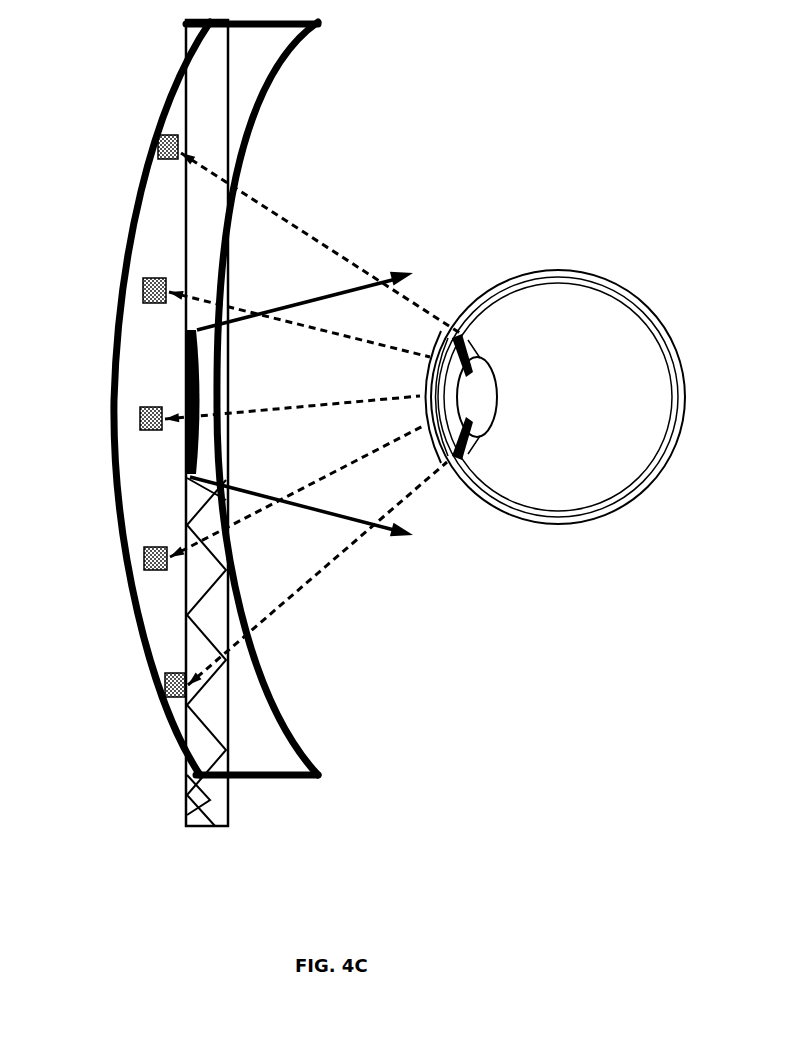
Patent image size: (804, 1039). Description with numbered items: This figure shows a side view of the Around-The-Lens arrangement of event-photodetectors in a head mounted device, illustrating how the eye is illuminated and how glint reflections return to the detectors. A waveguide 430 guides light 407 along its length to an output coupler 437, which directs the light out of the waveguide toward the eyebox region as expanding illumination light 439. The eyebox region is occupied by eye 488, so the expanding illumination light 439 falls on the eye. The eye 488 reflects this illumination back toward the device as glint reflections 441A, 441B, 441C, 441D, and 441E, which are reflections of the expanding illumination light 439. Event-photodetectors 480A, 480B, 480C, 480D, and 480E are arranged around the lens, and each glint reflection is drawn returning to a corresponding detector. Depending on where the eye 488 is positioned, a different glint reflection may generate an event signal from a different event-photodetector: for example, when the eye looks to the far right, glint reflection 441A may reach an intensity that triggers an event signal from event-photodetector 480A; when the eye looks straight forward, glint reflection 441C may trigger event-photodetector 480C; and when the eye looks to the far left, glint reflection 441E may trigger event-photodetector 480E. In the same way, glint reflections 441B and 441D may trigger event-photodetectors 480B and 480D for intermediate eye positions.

The waveguide 430 is at (231, 790).
The light 407 is at (211, 827).
The output coupler 437 is at (186, 372).
The event-photodetector 480A is at (158, 147).
The event-photodetector 480B is at (143, 292).
The event-photodetector 480C is at (140, 418).
The event-photodetector 480D is at (144, 557).
The event-photodetector 480E is at (165, 685).
The glint reflection 441A is at (287, 217).
The glint reflection 441B is at (240, 306).
The glint reflection 441C is at (259, 405).
The glint reflection 441D is at (317, 478).
The glint reflection 441E is at (310, 583).
The expanding illumination light 439 is at (400, 268).
The eye 488 is at (534, 262).